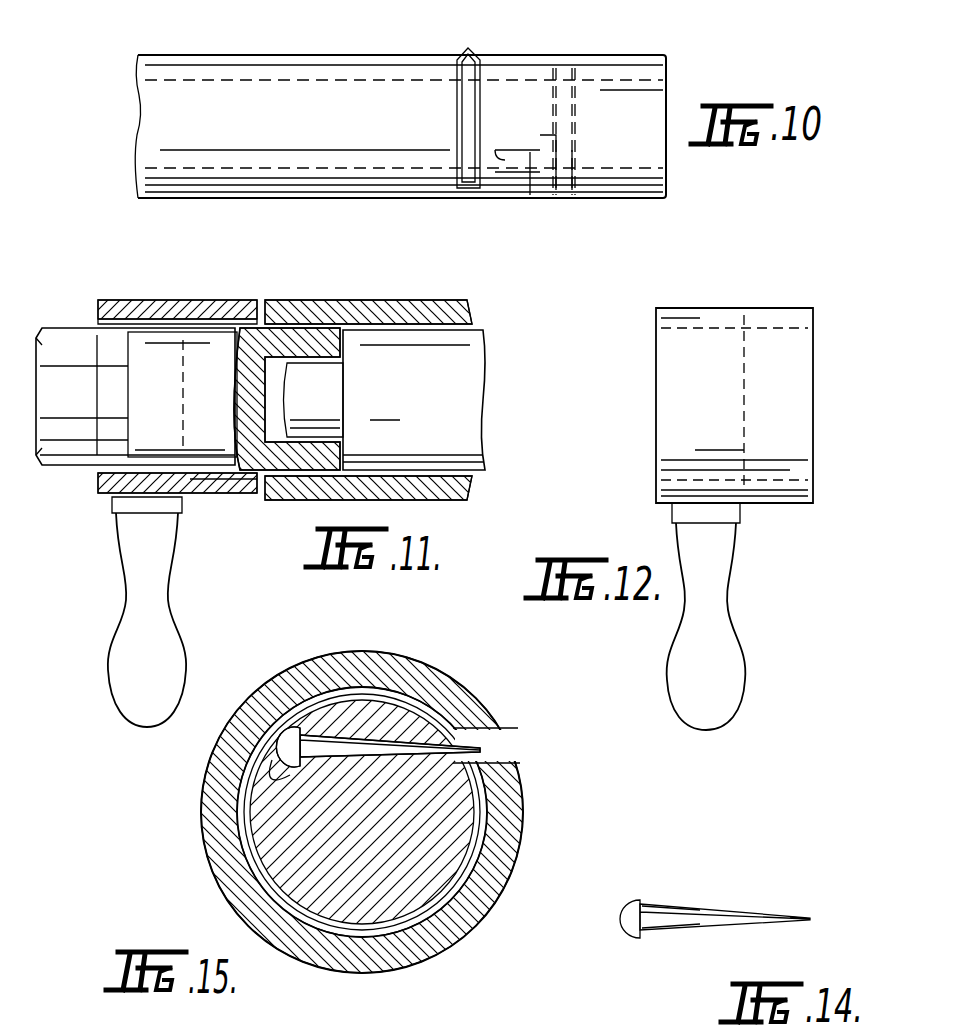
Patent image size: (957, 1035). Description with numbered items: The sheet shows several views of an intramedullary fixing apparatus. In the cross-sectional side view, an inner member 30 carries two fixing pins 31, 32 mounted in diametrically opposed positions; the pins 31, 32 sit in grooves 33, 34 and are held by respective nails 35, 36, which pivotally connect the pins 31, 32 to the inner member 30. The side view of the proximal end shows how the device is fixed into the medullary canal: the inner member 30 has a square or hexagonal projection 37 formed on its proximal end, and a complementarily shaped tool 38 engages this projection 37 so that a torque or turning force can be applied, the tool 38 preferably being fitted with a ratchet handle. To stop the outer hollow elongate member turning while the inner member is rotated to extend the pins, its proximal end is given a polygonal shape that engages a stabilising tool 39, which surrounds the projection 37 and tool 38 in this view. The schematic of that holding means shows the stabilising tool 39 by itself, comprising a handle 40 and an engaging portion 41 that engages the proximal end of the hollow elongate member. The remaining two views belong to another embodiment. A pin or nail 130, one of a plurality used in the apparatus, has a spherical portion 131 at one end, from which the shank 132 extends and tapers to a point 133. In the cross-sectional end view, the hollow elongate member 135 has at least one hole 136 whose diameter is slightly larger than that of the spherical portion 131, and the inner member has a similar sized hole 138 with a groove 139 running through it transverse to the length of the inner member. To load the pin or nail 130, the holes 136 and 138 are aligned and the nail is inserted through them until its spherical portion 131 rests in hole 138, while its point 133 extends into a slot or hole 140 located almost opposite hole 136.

In FIG. 10, the inner member 30 is at (293, 131).
In FIG. 11, the inner member 30 is at (383, 368).
In FIG. 10, the fixing pin 31 is at (457, 118).
In FIG. 10, the fixing pin 32 is at (585, 138).
In FIG. 10, the groove 33 is at (495, 155).
In FIG. 10, the groove 34 is at (538, 150).
In FIG. 10, the nail 35 is at (308, 198).
In FIG. 10, the nail 36 is at (216, 82).
In FIG. 11, the square or hexagonal projection 37 is at (312, 378).
In FIG. 11, the tool 38 is at (175, 405).
In FIG. 11, the stabilising tool 39 is at (106, 298).
In FIG. 12, the stabilising tool 39 is at (652, 378).
In FIG. 11, the handle 40 is at (140, 537).
In FIG. 12, the handle 40 is at (712, 607).
In FIG. 11, the engaging portion 41 is at (180, 305).
In FIG. 12, the engaging portion 41 is at (781, 335).
In FIG. 15, the pin or nail 130 is at (404, 728).
In FIG. 14, the pin or nail 130 is at (727, 896).
In FIG. 14, the spherical portion 131 is at (618, 914).
In FIG. 14, the shank 132 is at (660, 920).
In FIG. 14, the point 133 is at (807, 918).
In FIG. 15, the hollow elongate member 135 is at (252, 885).
In FIG. 15, the hole 136 is at (232, 745).
In FIG. 15, the hole 138 is at (272, 768).
In FIG. 15, the groove 139 is at (348, 720).
In FIG. 15, the slot or hole 140 is at (492, 742).